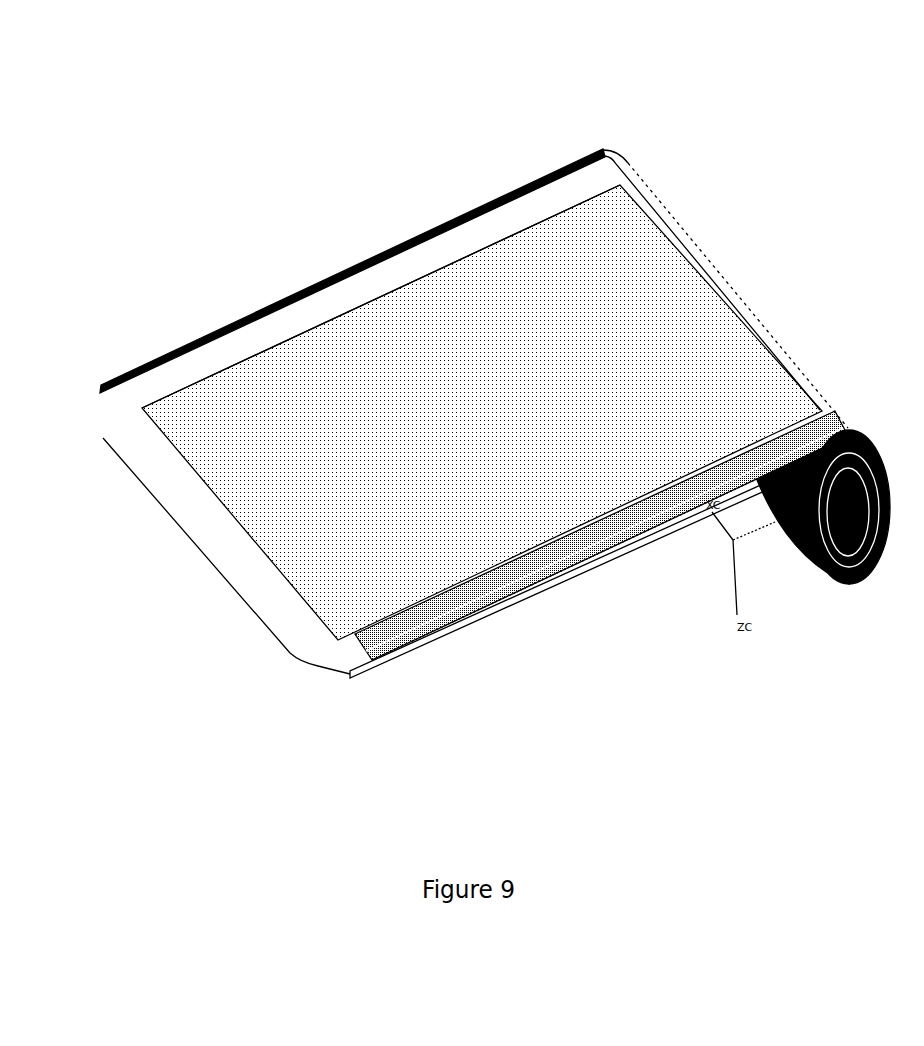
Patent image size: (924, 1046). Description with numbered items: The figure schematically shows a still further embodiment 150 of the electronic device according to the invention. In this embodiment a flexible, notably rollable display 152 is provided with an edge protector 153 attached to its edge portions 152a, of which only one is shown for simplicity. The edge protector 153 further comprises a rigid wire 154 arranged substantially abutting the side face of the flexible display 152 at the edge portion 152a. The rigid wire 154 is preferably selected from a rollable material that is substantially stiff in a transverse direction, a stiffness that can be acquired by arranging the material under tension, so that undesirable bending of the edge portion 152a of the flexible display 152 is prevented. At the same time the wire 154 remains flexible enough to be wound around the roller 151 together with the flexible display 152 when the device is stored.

The electronic device embodiment 150 is at (420, 100).
The roller 151 is at (797, 543).
The flexible display 152 is at (327, 577).
The edge portion 152a is at (277, 330).
The edge protector 153 is at (468, 590).
The rigid wire 154 is at (123, 378).